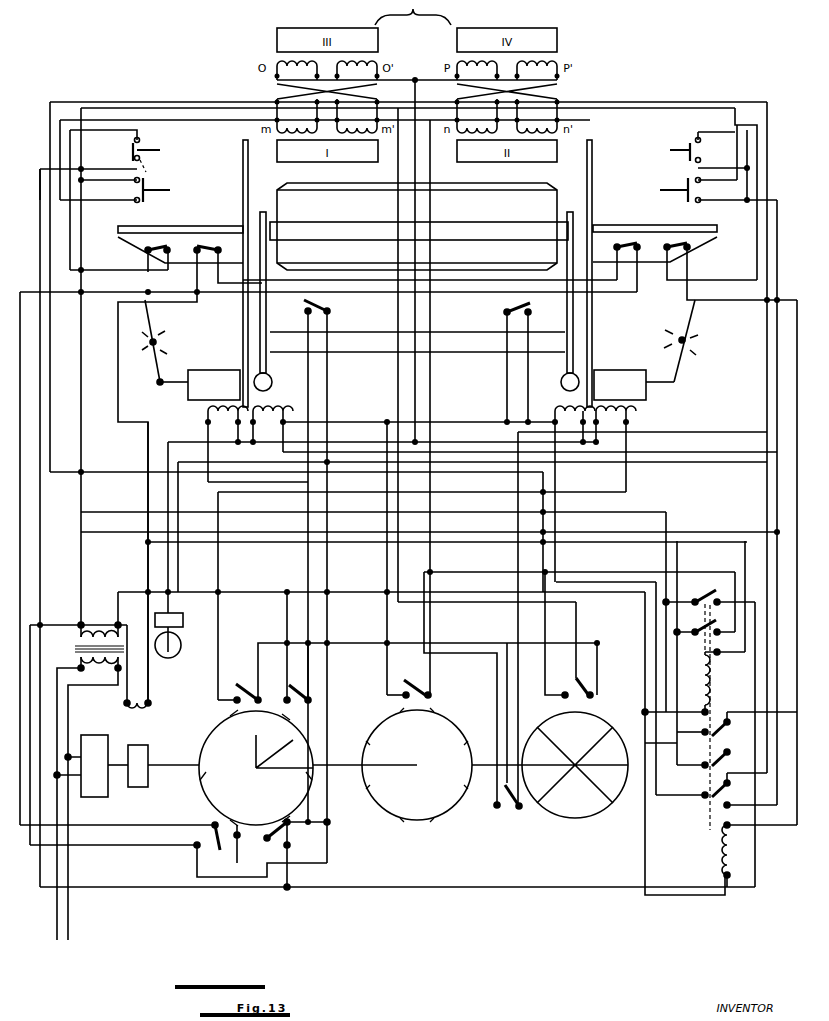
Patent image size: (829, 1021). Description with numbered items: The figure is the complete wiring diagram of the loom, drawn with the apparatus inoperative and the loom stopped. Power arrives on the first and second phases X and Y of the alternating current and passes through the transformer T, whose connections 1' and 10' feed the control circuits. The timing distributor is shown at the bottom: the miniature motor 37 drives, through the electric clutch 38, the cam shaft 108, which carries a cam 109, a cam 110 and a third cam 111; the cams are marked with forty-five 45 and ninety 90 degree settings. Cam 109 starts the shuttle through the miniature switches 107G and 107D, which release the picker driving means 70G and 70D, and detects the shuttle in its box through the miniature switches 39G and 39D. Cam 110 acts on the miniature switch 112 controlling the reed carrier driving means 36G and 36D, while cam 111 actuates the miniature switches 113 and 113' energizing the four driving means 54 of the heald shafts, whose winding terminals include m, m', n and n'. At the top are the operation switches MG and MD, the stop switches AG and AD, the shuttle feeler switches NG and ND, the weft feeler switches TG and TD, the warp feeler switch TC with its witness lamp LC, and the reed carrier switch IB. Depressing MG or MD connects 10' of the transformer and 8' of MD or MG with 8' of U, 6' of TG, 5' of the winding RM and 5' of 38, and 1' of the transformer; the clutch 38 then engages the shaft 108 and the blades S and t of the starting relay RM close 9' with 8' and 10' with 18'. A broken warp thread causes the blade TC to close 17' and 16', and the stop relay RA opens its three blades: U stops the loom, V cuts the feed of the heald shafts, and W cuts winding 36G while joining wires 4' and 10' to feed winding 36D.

The driving means for the heald shafts 54 is at (417, 26).
The electric connection 6' is at (419, 245).
The left-hand driving means for the reed carrier 36G is at (278, 301).
The right-hand driving means for the reed carrier 36D is at (559, 301).
The left-hand stop switch AG is at (109, 200).
The left-hand operation switch MG is at (164, 190).
The right-hand stop switch AD is at (713, 162).
The right-hand operation switch MD is at (670, 190).
The electric connection 8' is at (355, 338).
The left-hand shuttle feeler switch NG is at (180, 249).
The left-hand weft feeler switch TG is at (190, 469).
The right-hand weft feeler switch TD is at (655, 258).
The right-hand shuttle feeler switch ND is at (730, 268).
The warp feeler switch TC is at (307, 561).
The reed carrier control switch IB is at (528, 362).
The electric connection 17' is at (269, 440).
The winding terminal n is at (614, 362).
The electric connection 16' is at (318, 604).
The winding terminal m' is at (380, 391).
The electric connection 5' is at (301, 420).
The left-hand picker driving means 70G is at (214, 378).
The electric connection 10' is at (710, 341).
The right-hand picker driving means 70D is at (620, 378).
The electric connection 1' is at (224, 444).
The winding terminal n' is at (619, 558).
The winding terminal m is at (113, 464).
The electric wire 4' is at (615, 641).
The electric connection 9' is at (109, 712).
The electric connection 18' is at (445, 620).
The transformer T is at (93, 646).
The first phase X is at (48, 935).
The second phase Y is at (77, 935).
The witness lamp LC is at (179, 625).
The miniature motor 37 is at (81, 766).
The electric clutch 38 is at (144, 754).
The cam shaft 108 is at (177, 781).
The cam 109 is at (256, 786).
The 45 degree angle 45 is at (262, 756).
The cam 110 is at (417, 765).
The third cam 111 is at (575, 765).
The 90 degree angle 90 is at (593, 752).
The miniature switch 107D is at (407, 673).
The miniature switch 107G is at (302, 647).
The miniature switch 112 is at (419, 689).
The miniature switch 113 is at (584, 635).
The miniature switch 113' is at (509, 737).
The miniature switch 39D is at (248, 849).
The miniature switch 39G is at (297, 854).
The contact blade S is at (709, 615).
The contact blade t is at (704, 622).
The starting relay RM is at (713, 682).
The first contact blade U is at (707, 716).
The second contact blade V is at (692, 749).
The third contact blade W is at (711, 780).
The stop relay RA is at (759, 844).